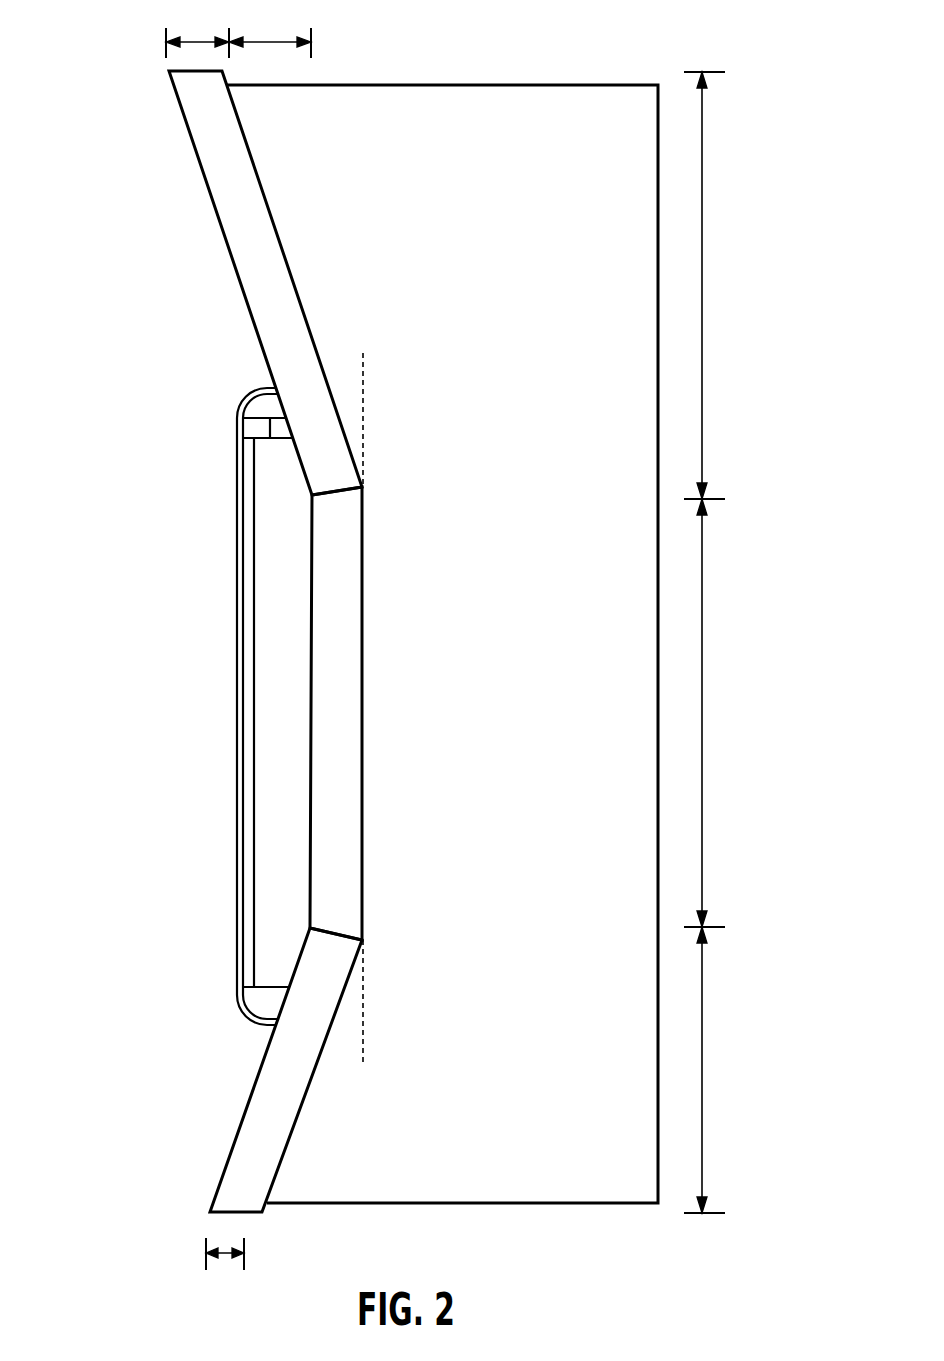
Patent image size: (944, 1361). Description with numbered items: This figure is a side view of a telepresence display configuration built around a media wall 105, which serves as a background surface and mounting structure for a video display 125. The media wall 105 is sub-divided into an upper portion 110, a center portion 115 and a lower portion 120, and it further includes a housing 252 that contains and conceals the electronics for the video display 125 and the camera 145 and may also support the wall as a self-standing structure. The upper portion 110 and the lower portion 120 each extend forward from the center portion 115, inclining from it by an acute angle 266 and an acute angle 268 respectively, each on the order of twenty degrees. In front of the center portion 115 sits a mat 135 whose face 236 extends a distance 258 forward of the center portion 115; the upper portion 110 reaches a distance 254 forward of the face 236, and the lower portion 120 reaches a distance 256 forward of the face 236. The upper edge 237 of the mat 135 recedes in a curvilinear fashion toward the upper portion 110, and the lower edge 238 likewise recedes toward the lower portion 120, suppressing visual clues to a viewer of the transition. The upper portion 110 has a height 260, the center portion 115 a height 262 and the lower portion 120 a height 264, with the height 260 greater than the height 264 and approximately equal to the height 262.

The media wall 105 is at (170, 296).
The upper portion 110 is at (247, 139).
The center portion 115 is at (364, 530).
The lower portion 120 is at (291, 1126).
The video display 125 is at (301, 637).
The mat 135 is at (207, 695).
The camera 145 is at (257, 412).
The face 236 is at (236, 712).
The upper edge 237 is at (268, 386).
The lower edge 238 is at (248, 1022).
The housing 252 is at (594, 140).
The distance 254 is at (196, 40).
The distance 256 is at (224, 1262).
The distance 258 is at (268, 40).
The height 260 is at (703, 250).
The height 262 is at (703, 715).
The height 264 is at (703, 1070).
The acute angle 266 is at (362, 366).
The acute angle 268 is at (362, 1052).